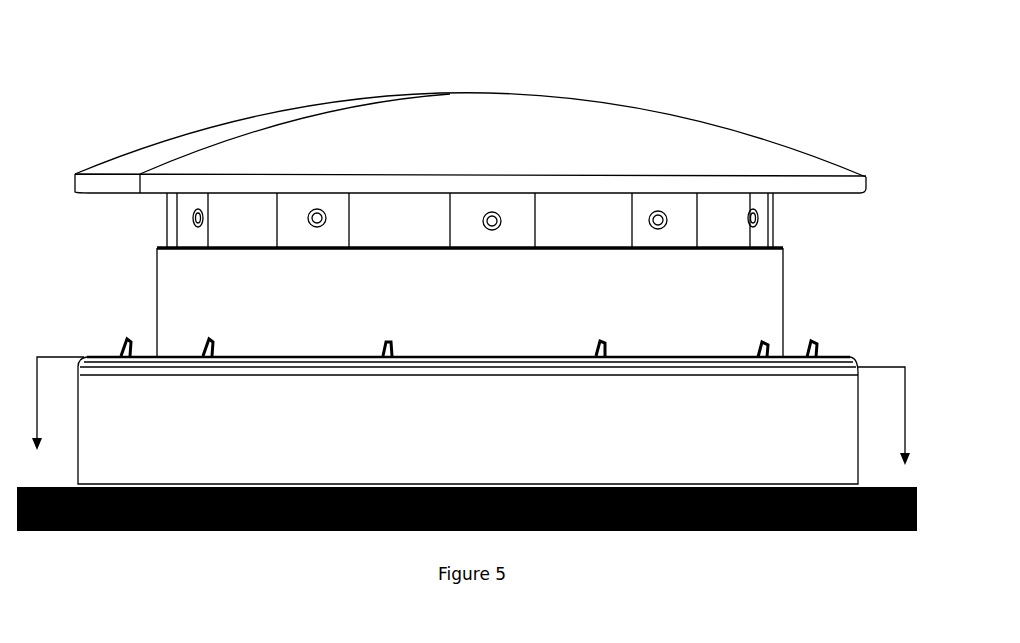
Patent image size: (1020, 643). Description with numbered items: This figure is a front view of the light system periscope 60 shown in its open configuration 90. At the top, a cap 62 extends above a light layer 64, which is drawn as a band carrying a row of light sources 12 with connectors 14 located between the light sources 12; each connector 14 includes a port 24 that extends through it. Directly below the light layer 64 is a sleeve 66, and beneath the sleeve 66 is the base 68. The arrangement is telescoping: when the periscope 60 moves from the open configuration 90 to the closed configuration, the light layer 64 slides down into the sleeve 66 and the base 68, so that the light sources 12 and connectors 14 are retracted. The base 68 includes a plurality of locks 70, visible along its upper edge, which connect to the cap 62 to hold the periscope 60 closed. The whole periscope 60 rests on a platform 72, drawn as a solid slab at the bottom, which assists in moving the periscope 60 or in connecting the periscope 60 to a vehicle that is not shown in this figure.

The light source 12 is at (405, 222).
The connector 14 is at (463, 207).
The port 24 is at (497, 214).
The periscope 60 is at (715, 97).
The cap 62 is at (182, 150).
The light layer 64 is at (806, 207).
The sleeve 66 is at (195, 302).
The base 68 is at (205, 450).
The lock 70 is at (612, 346).
The platform 72 is at (322, 531).
The open configuration 90 is at (807, 128).